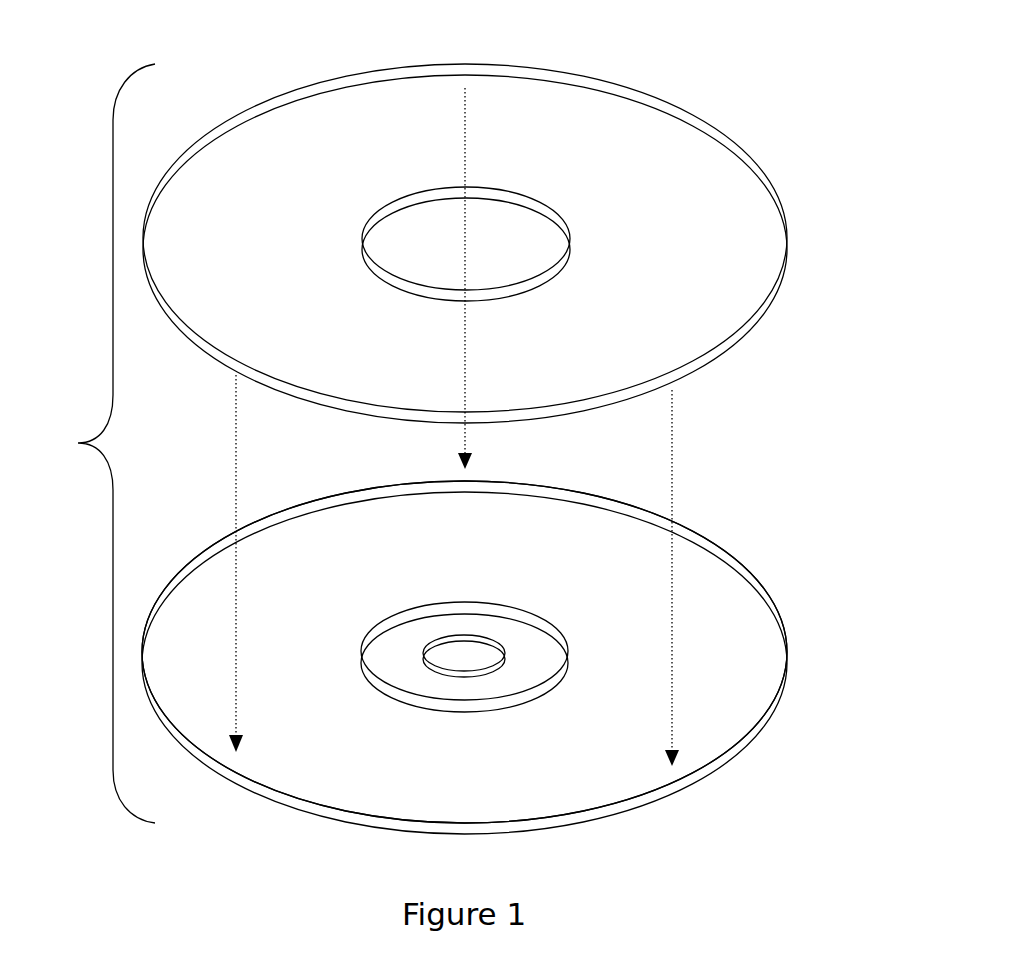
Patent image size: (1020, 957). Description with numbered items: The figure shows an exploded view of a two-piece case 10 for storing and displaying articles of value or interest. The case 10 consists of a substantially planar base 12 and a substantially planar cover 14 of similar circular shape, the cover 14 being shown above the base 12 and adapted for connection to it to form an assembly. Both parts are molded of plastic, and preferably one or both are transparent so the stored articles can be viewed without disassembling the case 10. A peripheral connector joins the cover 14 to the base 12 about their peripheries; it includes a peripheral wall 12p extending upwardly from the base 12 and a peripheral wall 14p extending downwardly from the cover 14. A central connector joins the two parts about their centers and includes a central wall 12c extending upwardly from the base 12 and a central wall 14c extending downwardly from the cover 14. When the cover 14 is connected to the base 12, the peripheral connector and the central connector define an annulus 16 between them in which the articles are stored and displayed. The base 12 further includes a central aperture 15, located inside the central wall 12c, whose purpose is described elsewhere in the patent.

The case 10 is at (78, 443).
The base 12 is at (473, 678).
The central wall 12c is at (502, 604).
The peripheral wall 12p is at (672, 792).
The cover 14 is at (487, 220).
The central wall 14c is at (525, 204).
The peripheral wall 14p is at (582, 82).
The central aperture 15 is at (465, 673).
The annulus 16 is at (320, 605).